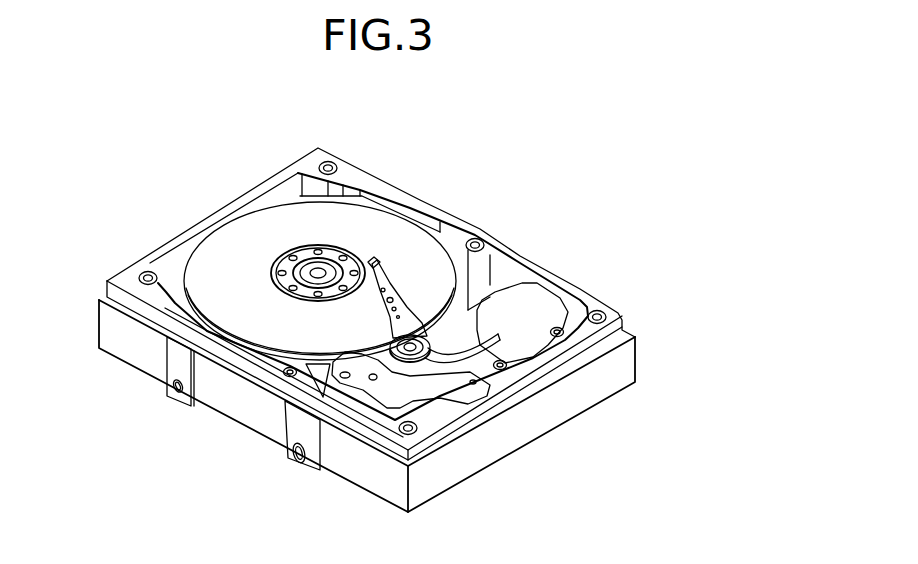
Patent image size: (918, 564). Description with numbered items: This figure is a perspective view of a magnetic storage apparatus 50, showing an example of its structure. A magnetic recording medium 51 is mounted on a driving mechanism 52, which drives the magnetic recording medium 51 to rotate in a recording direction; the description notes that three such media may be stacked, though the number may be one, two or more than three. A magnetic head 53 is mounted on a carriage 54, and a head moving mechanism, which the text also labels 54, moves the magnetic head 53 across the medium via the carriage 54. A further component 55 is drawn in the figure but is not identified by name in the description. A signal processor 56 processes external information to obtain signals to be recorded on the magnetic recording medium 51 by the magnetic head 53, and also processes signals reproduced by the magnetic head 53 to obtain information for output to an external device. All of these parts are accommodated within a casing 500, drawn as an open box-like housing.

The magnetic storage apparatus 50 is at (323, 106).
The magnetic recording medium 51 is at (360, 230).
The driving mechanism 52 is at (303, 250).
The magnetic head 53 is at (373, 262).
The carriage 54 is at (402, 307).
The flexible printed circuit bracket 55 is at (433, 382).
The signal processor 56 is at (542, 313).
The casing 500 is at (557, 408).